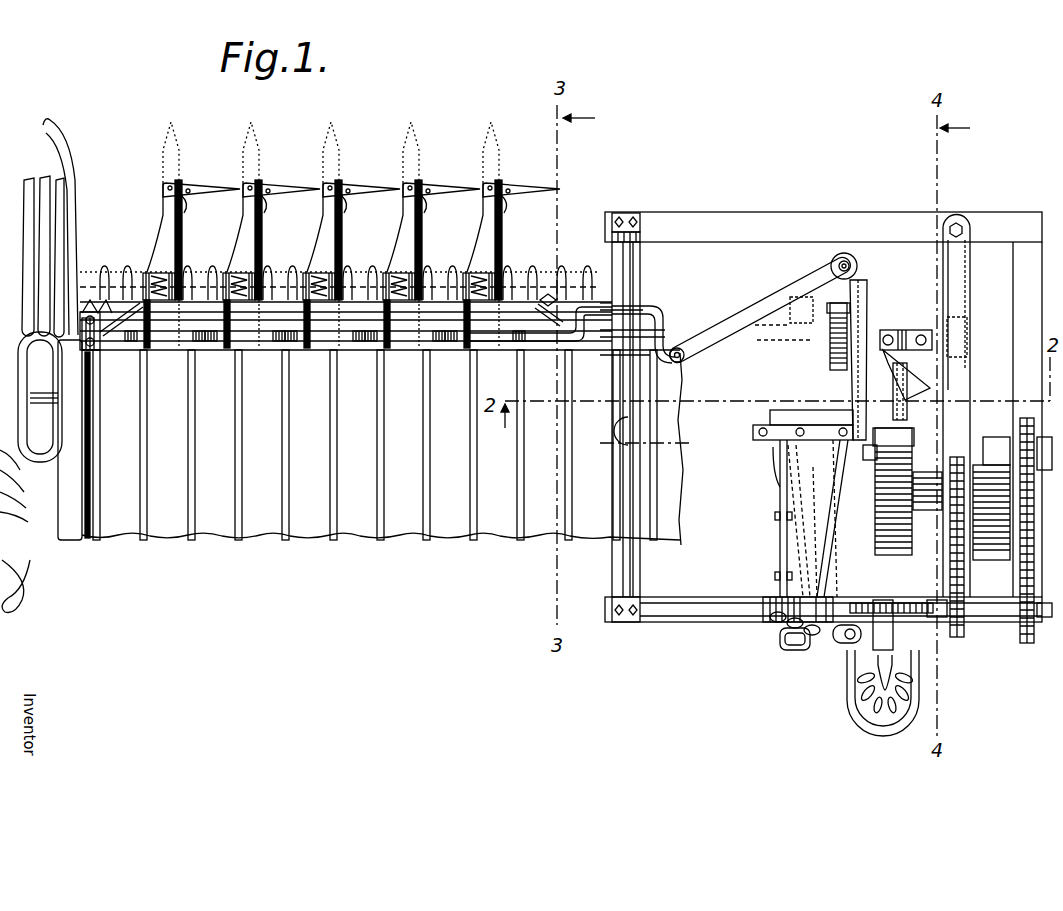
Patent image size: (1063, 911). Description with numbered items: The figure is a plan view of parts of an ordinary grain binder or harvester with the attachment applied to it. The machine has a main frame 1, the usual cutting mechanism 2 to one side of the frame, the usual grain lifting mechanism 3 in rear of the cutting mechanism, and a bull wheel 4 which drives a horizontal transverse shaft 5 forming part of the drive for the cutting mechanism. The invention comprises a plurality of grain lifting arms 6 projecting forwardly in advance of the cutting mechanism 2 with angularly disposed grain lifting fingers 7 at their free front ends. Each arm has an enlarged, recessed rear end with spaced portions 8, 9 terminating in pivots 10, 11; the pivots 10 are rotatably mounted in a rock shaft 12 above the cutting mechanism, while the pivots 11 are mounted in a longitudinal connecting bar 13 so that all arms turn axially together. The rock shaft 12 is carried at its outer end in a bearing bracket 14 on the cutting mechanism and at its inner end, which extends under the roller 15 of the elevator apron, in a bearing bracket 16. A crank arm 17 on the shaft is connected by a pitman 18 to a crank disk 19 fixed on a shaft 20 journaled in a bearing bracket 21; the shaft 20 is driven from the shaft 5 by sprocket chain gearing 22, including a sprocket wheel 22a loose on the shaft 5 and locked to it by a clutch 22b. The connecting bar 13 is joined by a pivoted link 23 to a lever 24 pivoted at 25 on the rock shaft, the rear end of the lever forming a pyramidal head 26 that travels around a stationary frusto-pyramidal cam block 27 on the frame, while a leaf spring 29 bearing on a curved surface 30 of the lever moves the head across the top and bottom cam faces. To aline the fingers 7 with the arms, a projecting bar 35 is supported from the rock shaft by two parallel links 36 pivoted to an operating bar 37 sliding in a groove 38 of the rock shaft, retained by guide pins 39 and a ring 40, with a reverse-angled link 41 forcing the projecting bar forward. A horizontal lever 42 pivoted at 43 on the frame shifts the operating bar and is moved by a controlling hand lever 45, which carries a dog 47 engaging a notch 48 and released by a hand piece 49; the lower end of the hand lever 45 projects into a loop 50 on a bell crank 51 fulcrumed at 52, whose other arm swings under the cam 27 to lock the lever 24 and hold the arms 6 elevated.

The main frame 1 is at (730, 226).
The cutting mechanism 2 is at (350, 288).
The grain lifting mechanism 3 is at (370, 442).
The bull wheel 4 is at (983, 432).
The shaft 5 is at (1043, 640).
The grain lifting arms 6 is at (163, 212).
The grain lifting fingers 7 is at (165, 160).
The spaced portion 8 is at (266, 275).
The spaced portion 9 is at (138, 280).
The pivot 10 is at (631, 214).
The pivot 11 is at (226, 345).
The rock shaft 12 is at (364, 343).
The connecting bar 13 is at (320, 343).
The bearing bracket 14 is at (97, 350).
The roller 15 is at (643, 283).
The bearing bracket 16 is at (631, 621).
The crank arm 17 is at (882, 335).
The pitman 18 is at (815, 338).
The crank disk 19 is at (893, 462).
The shaft 20 is at (857, 486).
The bearing bracket 21 is at (930, 502).
The sprocket chain gearing 22 is at (953, 562).
The sprocket wheel 22a is at (960, 645).
The clutch 22b is at (940, 613).
The link 23 is at (786, 300).
The lever 24 is at (856, 270).
The pivot 25 is at (892, 332).
The head 26 is at (908, 397).
The cam block 27 is at (948, 410).
The leaf spring 29 is at (897, 388).
The curved surface 30 is at (892, 392).
The projecting bar 35 is at (547, 302).
The parallel links 36 is at (565, 300).
The operating bar 37 is at (497, 306).
The groove 38 is at (580, 303).
The guide pins 39 is at (192, 280).
The ring 40 is at (833, 345).
The link 41 is at (120, 300).
The lever 42 is at (840, 510).
The pivot 43 is at (840, 436).
The controlling hand lever 45 is at (827, 636).
The dog 47 is at (770, 628).
The notch 48 is at (760, 603).
The hand piece 49 is at (888, 642).
The loop 50 is at (783, 652).
The bell crank 51 is at (790, 543).
The fulcrum 52 is at (773, 445).